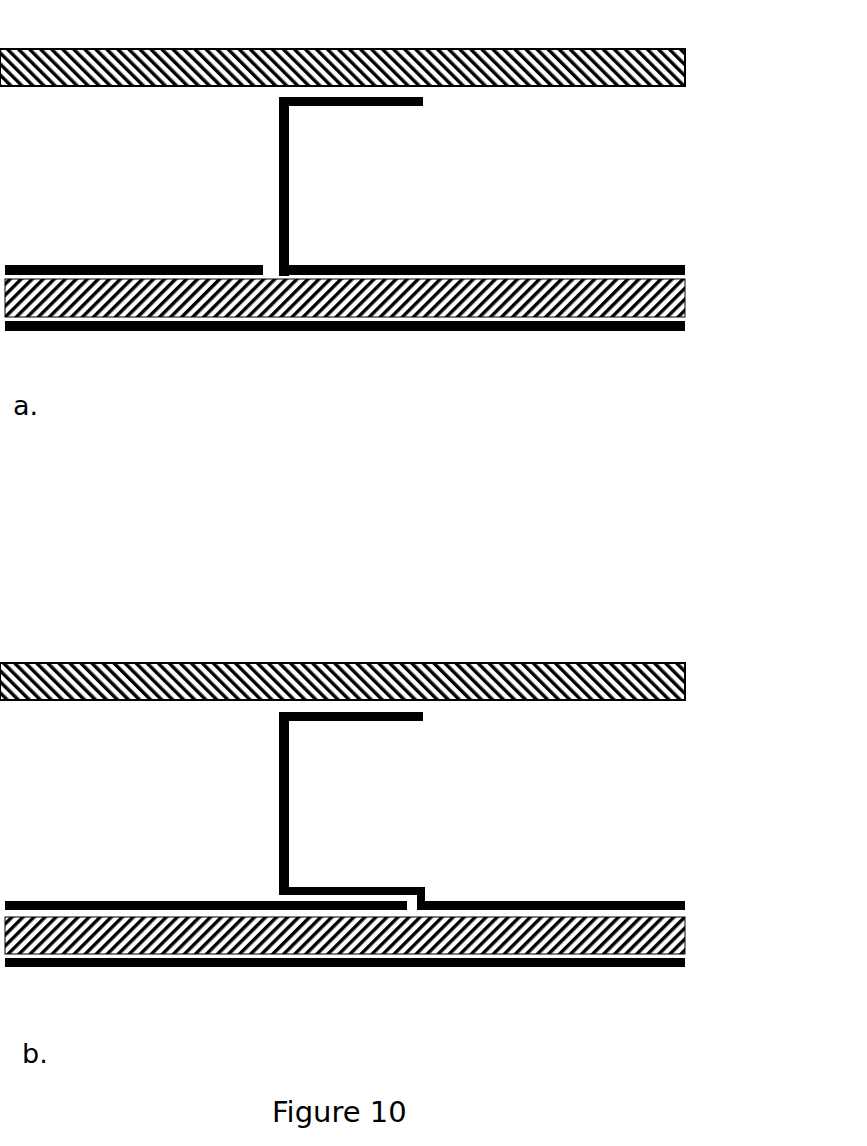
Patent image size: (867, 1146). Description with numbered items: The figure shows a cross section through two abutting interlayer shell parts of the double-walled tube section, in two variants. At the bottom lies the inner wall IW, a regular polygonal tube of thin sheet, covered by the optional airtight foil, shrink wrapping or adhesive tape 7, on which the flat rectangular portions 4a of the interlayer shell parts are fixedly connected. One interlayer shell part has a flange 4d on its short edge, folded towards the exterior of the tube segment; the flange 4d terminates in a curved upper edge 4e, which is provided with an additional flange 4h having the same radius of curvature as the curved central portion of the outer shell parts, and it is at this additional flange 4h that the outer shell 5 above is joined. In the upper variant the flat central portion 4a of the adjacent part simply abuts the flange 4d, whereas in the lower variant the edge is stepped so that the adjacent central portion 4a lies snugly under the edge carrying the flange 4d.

The upper electrode / counter layer 5 is at (342, 352).
The rectangular portion 4a is at (345, 568).
The flange 4d is at (352, 503).
The curved upper edge 4e is at (262, 108).
The additional flange 4h is at (351, 430).
The airtight foil, shrink wrapping or adhesive tape 7 is at (364, 616).
The inner wall IW is at (345, 665).